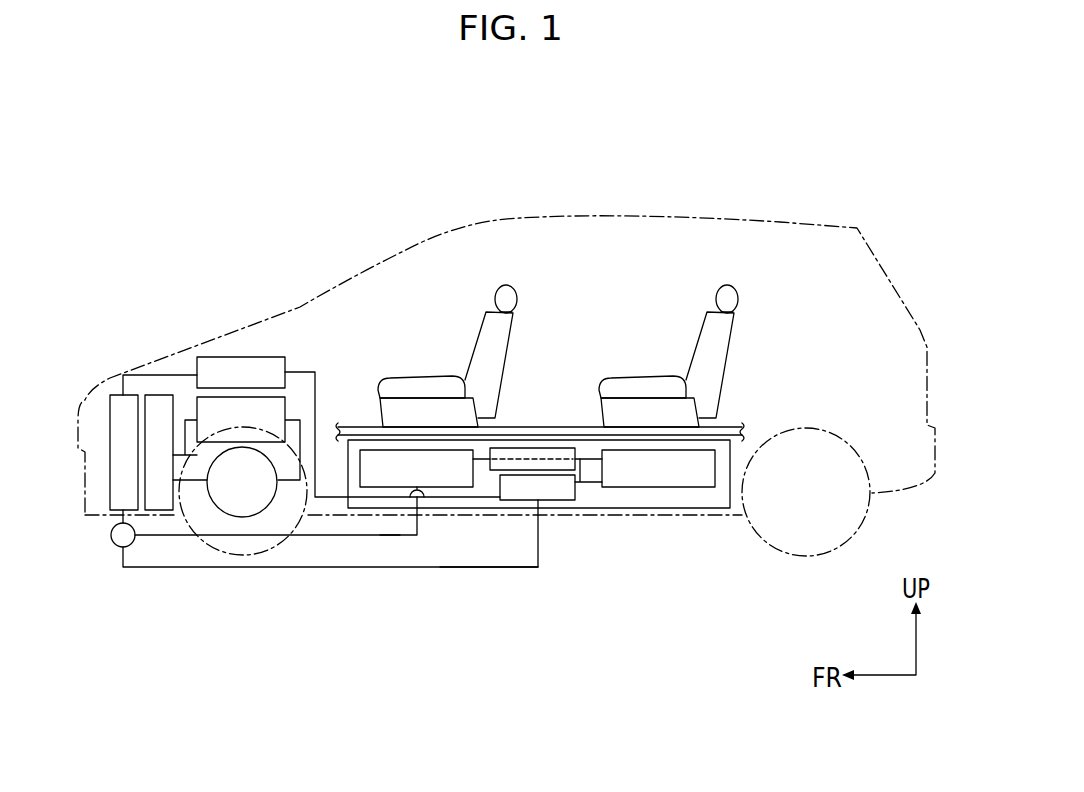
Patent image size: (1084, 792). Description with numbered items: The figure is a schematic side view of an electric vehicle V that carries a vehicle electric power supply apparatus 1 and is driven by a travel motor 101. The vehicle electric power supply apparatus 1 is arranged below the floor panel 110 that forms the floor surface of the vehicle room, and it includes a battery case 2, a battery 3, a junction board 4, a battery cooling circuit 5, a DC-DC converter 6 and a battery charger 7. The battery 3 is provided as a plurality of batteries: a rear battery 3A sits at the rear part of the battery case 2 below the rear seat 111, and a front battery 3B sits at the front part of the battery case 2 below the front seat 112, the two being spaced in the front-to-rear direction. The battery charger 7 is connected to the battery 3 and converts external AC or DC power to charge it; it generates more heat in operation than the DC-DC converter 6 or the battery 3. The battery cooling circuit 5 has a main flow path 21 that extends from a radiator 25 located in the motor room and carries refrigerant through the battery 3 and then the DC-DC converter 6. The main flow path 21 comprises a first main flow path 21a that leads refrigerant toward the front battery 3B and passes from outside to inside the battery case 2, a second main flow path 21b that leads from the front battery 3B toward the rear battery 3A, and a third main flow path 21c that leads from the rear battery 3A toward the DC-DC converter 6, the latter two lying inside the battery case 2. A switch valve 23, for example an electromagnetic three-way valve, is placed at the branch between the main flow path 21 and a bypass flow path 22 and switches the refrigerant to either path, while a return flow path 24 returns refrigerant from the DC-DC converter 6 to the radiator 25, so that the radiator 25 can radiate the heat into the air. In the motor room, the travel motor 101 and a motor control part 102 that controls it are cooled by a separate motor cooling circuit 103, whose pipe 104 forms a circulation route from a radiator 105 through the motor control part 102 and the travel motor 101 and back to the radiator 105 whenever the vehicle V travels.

The vehicle V is at (804, 192).
The vehicle electric power supply apparatus 1 is at (730, 510).
The battery case 2 is at (730, 462).
The battery 3 is at (542, 539).
The rear battery 3A is at (673, 488).
The front battery 3B is at (453, 488).
The junction board 4 is at (514, 448).
The battery cooling circuit 5 is at (513, 568).
The DC-DC converter 6 is at (558, 501).
The battery charger 7 is at (253, 357).
The main flow path 21 is at (166, 538).
The first main flow path 21a is at (390, 536).
The second main flow path 21b is at (587, 459).
The third main flow path 21c is at (593, 483).
The bypass flow path 22 is at (263, 568).
The switch valve 23 is at (112, 545).
The return flow path 24 is at (307, 372).
The radiator 25 is at (118, 376).
The travel motor 101 is at (275, 502).
The motor control part 102 is at (195, 398).
The motor cooling circuit 103 is at (295, 407).
The pipe 104 is at (197, 485).
The radiator 105 is at (118, 395).
The floor panel 110 is at (568, 427).
The rear seat 111 is at (654, 378).
The front seat 112 is at (420, 378).